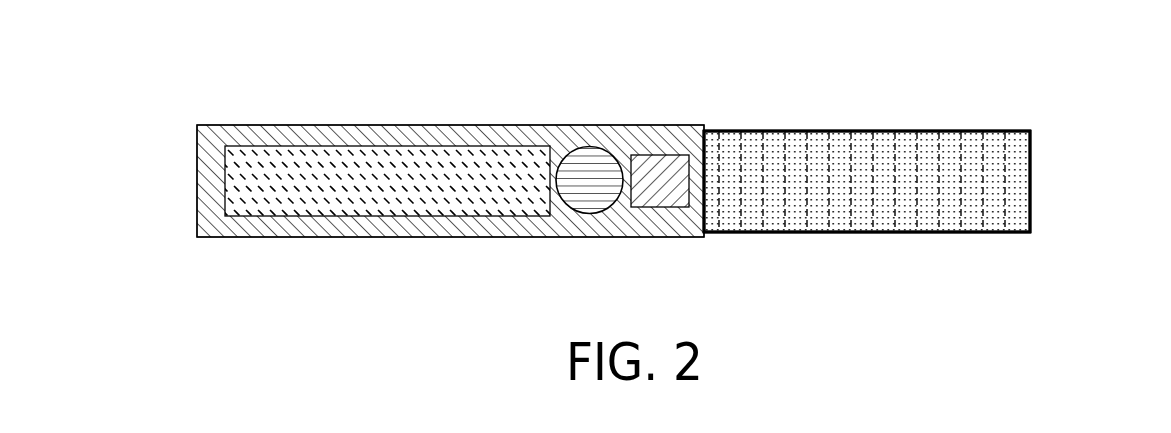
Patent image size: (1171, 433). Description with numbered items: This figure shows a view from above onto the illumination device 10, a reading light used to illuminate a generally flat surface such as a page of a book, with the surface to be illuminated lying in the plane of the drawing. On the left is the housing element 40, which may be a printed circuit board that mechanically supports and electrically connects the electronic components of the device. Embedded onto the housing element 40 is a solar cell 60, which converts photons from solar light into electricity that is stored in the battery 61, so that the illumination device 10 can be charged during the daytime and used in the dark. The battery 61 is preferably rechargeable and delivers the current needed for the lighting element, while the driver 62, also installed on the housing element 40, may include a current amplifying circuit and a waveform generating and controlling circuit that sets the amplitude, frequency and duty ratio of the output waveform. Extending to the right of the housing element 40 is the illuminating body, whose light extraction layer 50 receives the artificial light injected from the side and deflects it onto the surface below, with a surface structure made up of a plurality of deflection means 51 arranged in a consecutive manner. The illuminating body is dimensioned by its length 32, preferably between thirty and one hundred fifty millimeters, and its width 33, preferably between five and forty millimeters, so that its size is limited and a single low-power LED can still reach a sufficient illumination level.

The illumination device 10 is at (1137, 92).
The length 32 is at (1032, 110).
The width 33 is at (1050, 131).
The housing element 40 is at (215, 138).
The light extraction layer 50 is at (883, 220).
The deflection means 51 is at (962, 208).
The solar cell 60 is at (422, 160).
The battery 61 is at (592, 160).
The driver 62 is at (660, 157).